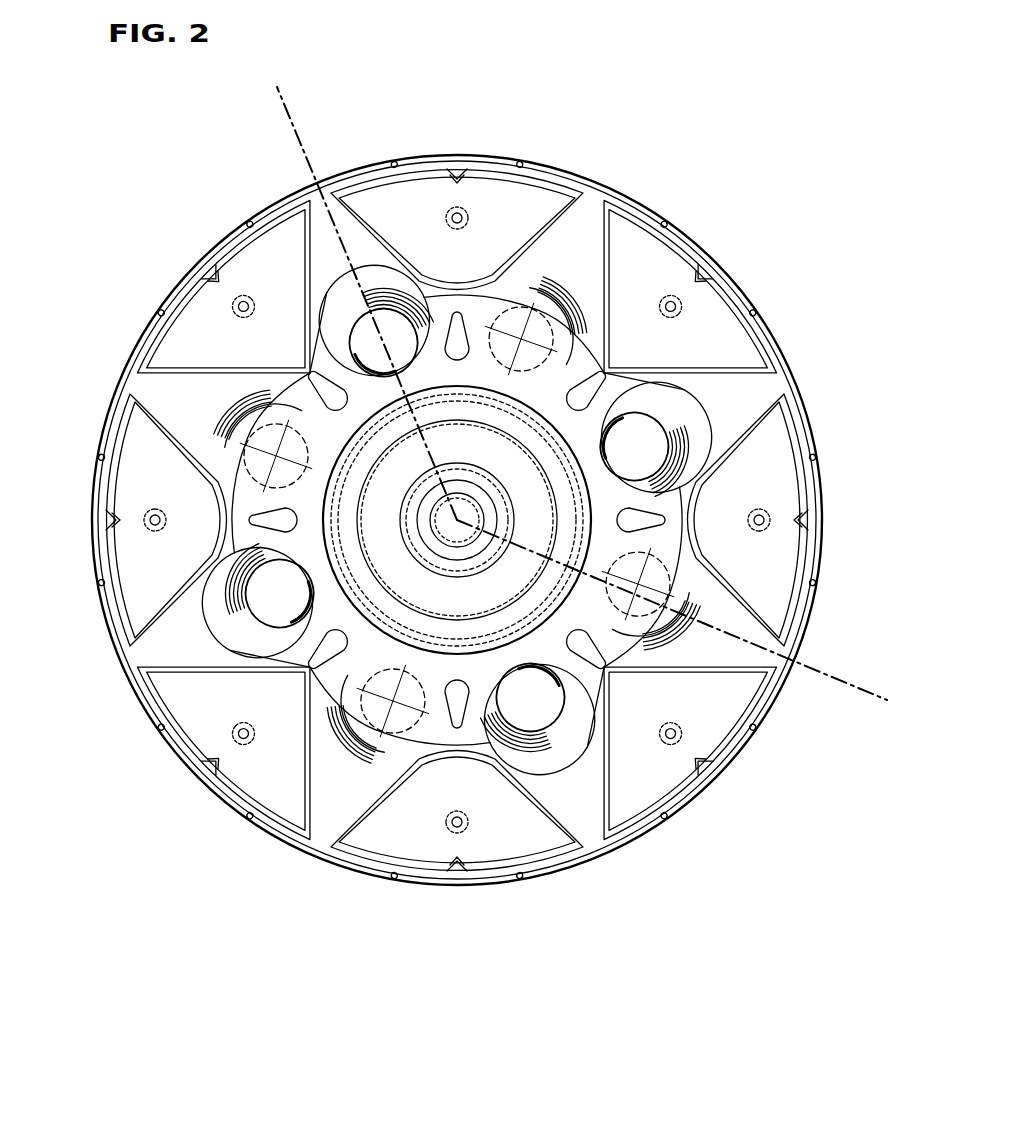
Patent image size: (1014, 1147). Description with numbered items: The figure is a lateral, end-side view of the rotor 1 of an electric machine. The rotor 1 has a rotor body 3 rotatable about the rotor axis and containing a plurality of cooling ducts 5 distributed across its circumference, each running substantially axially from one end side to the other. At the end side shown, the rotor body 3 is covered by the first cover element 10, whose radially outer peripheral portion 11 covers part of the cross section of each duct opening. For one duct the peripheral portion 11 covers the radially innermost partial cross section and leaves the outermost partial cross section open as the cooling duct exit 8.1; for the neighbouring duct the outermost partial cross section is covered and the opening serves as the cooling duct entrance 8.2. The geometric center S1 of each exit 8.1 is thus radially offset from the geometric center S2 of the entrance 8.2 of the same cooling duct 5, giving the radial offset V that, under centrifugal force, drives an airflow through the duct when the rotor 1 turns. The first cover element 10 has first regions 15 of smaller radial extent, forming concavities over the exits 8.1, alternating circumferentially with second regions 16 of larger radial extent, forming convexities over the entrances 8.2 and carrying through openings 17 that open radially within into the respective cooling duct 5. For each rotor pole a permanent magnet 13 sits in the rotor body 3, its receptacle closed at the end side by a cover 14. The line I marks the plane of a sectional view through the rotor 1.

The rotor 1 is at (463, 516).
The rotor body 3 is at (742, 210).
The cooling ducts 5 is at (481, 523).
The cooling duct exit 8.1 is at (543, 292).
The cooling duct entrance 8.2 is at (700, 478).
The first cover element 10 is at (740, 404).
The radially outer peripheral portion 11 is at (633, 303).
The permanent magnet 13 is at (395, 165).
The cover 14 is at (531, 190).
The first regions 15 is at (540, 283).
The second regions 16 is at (428, 310).
The through openings 17 is at (448, 316).
The geometric center of the cooling duct exit S1 is at (690, 605).
The geometric center of the cooling duct entrance S2 is at (668, 578).
The radial offset V is at (647, 614).
The section line I- I is at (270, 112).